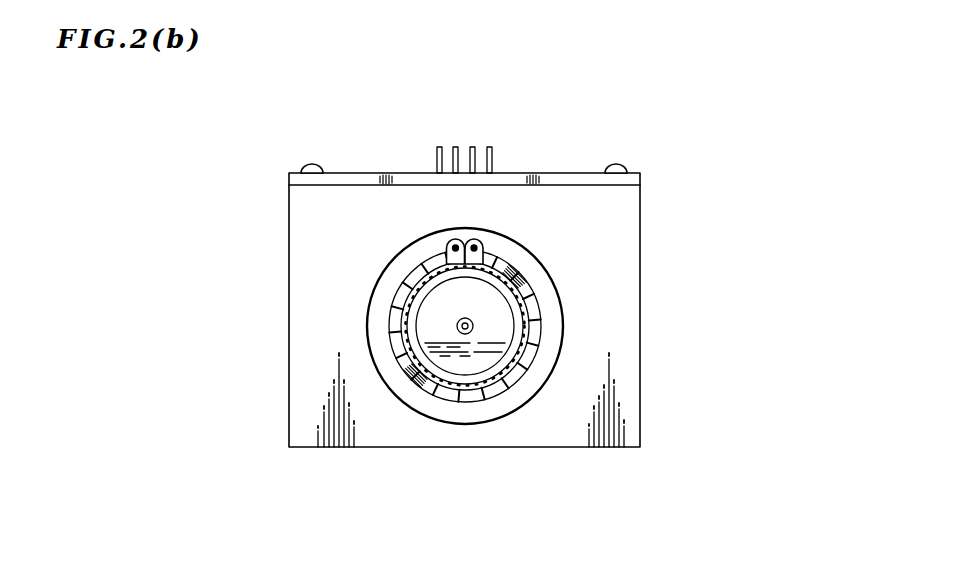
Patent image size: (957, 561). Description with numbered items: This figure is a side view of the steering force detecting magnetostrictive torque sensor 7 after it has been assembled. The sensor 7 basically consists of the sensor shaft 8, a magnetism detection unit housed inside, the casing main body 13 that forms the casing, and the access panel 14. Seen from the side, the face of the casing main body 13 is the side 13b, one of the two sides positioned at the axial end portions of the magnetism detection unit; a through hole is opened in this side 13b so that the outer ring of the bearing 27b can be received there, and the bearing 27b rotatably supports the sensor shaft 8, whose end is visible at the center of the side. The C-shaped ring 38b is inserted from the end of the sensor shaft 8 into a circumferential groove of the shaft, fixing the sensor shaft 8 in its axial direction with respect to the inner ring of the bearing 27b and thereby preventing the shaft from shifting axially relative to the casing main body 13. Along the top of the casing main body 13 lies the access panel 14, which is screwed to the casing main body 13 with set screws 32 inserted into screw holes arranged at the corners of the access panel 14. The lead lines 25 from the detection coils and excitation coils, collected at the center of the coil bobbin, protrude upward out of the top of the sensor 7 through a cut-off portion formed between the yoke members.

The steering force detecting magnetostrictive torque sensor 7 is at (452, 302).
The sensor shaft 8 is at (460, 362).
The casing main body 13 is at (524, 320).
The side of the casing main body 13b is at (598, 259).
The access panel 14 is at (577, 172).
The lead lines 25 is at (501, 140).
The bearing 27b is at (486, 414).
The set screws 32 is at (311, 164).
The C-shaped ring 38b is at (397, 328).